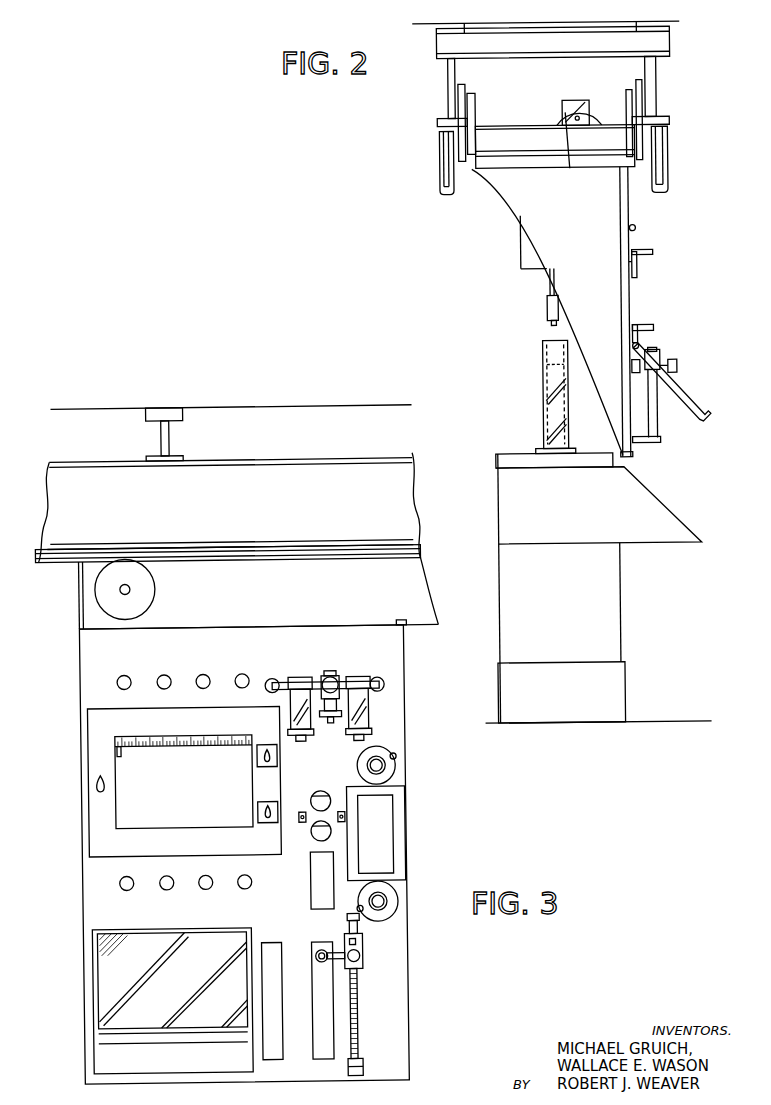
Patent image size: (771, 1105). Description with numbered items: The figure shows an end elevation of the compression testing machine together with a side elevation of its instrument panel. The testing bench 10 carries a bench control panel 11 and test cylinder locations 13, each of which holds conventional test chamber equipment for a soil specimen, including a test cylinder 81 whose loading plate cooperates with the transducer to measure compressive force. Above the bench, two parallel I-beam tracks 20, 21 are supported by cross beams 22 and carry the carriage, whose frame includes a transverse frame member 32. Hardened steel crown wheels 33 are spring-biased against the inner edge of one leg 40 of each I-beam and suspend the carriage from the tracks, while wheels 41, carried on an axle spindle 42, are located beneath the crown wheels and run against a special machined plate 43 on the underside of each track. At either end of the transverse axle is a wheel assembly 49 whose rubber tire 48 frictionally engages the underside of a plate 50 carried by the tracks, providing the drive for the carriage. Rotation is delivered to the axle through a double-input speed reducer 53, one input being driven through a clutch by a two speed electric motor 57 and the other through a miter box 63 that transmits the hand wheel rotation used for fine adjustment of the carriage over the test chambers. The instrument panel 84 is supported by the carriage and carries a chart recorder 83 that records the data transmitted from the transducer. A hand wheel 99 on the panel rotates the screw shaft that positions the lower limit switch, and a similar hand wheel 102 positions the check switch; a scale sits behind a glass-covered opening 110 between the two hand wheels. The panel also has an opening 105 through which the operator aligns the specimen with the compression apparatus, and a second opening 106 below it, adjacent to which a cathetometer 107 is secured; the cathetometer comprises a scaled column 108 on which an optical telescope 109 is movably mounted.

In FIG. 2, the testing bench 10 is at (602, 690).
In FIG. 2, the bench control panel 11 is at (656, 520).
In FIG. 2, the test cylinder location 13 is at (530, 370).
In FIG. 2, the I-beam track 20 is at (450, 80).
In FIG. 2, the I-beam track 21 is at (660, 86).
In FIG. 3, the I-beam track 21 is at (398, 500).
In FIG. 2, the cross beam 22 is at (668, 40).
In FIG. 3, the cross beam 22 is at (168, 412).
In FIG. 2, the transverse frame member 32 is at (490, 170).
In FIG. 2, the crown wheel 33 is at (463, 100).
In FIG. 2, the leg of I-beam 40 is at (480, 120).
In FIG. 2, the wheel 41 is at (452, 143).
In FIG. 3, the wheel 41 is at (146, 588).
In FIG. 3, the axle spindle 42 is at (130, 591).
In FIG. 3, the machined plate 43 is at (47, 562).
In FIG. 2, the rubber tire 48 is at (442, 186).
In FIG. 2, the wheel assembly 49 is at (430, 173).
In FIG. 2, the plate 50 is at (674, 122).
In FIG. 2, the speed reducer 53 is at (567, 100).
In FIG. 2, the two speed electric motor 57 is at (557, 105).
In FIG. 2, the miter box 63 is at (571, 151).
In FIG. 2, the test cylinder 81 is at (543, 402).
In FIG. 3, the chart recorder 83 is at (100, 732).
In FIG. 2, the instrument panel 84 is at (631, 228).
In FIG. 3, the instrument panel 84 is at (100, 658).
In FIG. 2, the hand wheel 99 is at (641, 323).
In FIG. 3, the hand wheel 99 is at (396, 905).
In FIG. 2, the hand wheel 102 is at (656, 252).
In FIG. 3, the hand wheel 102 is at (392, 770).
In FIG. 3, the opening 105 is at (313, 888).
In FIG. 3, the second opening 106 is at (318, 975).
In FIG. 3, the cathetometer 107 is at (364, 947).
In FIG. 3, the column 108 is at (358, 1012).
In FIG. 2, the optical telescope 109 is at (679, 366).
In FIG. 3, the optical telescope 109 is at (356, 963).
In FIG. 3, the glass-covered opening 110 is at (388, 830).